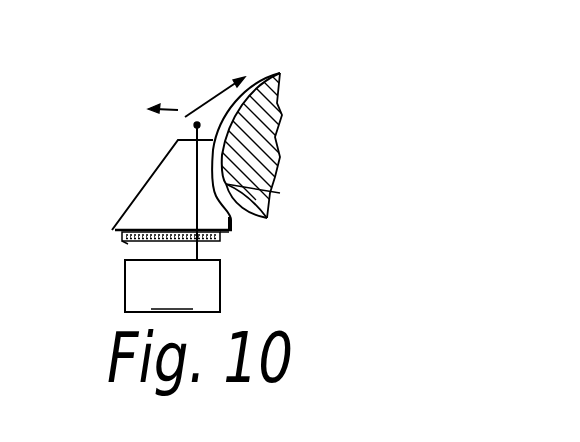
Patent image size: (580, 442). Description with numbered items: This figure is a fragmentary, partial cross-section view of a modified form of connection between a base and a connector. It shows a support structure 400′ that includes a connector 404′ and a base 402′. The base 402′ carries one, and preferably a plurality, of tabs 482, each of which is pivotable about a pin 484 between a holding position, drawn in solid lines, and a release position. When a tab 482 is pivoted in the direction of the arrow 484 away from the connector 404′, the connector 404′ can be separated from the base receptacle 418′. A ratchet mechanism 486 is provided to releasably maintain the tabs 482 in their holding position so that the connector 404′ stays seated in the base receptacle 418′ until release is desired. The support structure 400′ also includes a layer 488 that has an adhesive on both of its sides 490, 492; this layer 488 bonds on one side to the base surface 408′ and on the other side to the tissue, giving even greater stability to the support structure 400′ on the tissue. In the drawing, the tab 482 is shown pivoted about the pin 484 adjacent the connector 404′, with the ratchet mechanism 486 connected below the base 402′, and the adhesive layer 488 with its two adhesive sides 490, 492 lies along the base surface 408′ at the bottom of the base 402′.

The support structure 400′ is at (248, 77).
The base 402′ is at (159, 178).
The connector 404′ is at (281, 101).
The base surface 408′ is at (121, 239).
The base receptacle 418′ is at (268, 195).
The tab 482 is at (210, 105).
The pin 484 is at (185, 116).
The ratchet mechanism 486 is at (172, 286).
The layer 488 is at (221, 239).
The adhesive side 490 is at (162, 230).
The adhesive side 492 is at (128, 244).